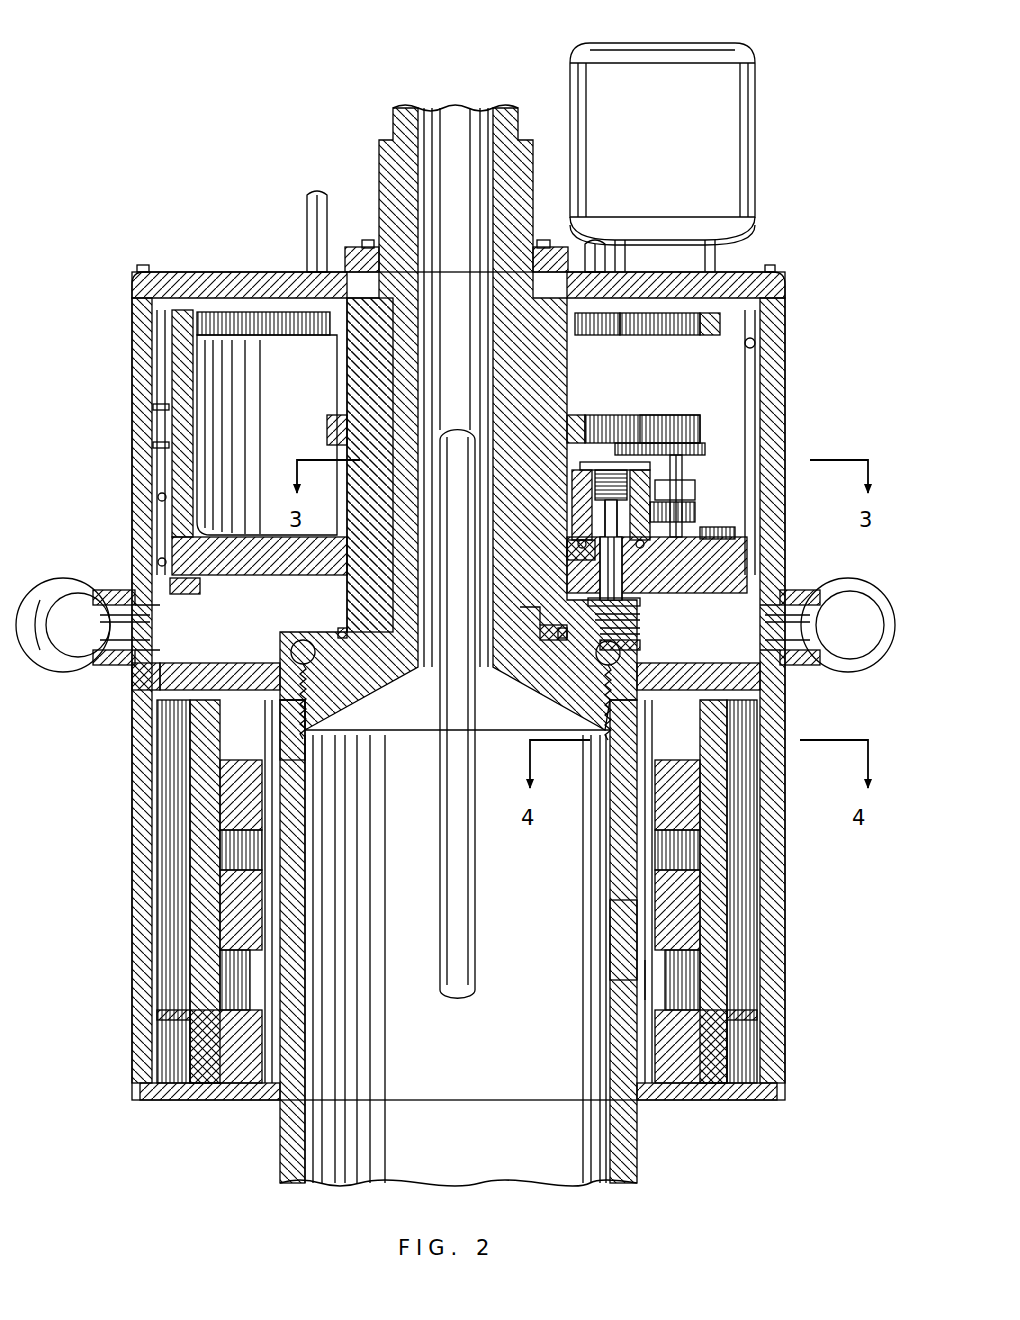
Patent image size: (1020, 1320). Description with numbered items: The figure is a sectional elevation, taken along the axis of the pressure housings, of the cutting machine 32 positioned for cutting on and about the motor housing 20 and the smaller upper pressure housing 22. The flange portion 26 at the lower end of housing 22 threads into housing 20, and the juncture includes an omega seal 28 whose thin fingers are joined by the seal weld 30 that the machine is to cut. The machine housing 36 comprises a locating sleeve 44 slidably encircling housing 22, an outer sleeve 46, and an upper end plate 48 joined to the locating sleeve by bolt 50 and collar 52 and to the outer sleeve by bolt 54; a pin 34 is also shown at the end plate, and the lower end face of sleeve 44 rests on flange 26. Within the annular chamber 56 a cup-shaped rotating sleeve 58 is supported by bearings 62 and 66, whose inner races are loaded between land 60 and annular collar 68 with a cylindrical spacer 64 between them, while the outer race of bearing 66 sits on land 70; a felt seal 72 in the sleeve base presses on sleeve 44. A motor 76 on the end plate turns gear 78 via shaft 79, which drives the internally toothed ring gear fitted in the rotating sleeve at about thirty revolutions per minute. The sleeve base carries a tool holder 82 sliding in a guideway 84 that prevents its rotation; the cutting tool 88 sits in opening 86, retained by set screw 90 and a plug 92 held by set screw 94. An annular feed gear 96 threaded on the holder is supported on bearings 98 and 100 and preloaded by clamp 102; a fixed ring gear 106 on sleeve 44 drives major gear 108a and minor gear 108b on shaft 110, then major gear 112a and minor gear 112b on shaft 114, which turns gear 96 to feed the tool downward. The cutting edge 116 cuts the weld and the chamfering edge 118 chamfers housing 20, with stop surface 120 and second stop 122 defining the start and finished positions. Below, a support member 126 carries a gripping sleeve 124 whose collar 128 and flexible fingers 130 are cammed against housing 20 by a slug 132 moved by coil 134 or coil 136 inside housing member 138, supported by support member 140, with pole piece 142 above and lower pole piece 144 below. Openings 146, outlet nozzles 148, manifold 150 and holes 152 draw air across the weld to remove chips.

The motor housing 20 is at (290, 1120).
The upper pressure housing 22 is at (393, 125).
The flange portion 26 is at (346, 731).
The omega seal 28 is at (282, 640).
The seal weld 30 is at (300, 640).
The cutting machine 32 is at (106, 255).
The locating pin 34 is at (307, 225).
The machine housing 36 is at (132, 325).
The locating sleeve 44 is at (356, 366).
The outer sleeve 46 is at (140, 370).
The upper end plate 48 is at (252, 272).
The bolt 50 is at (368, 240).
The collar 52 is at (357, 247).
The bolt 54 is at (775, 270).
The annular chamber 56 is at (290, 382).
The rotating sleeve 58 is at (160, 410).
The land 60 is at (742, 320).
The bearing 62 is at (756, 343).
The cylindrical spacer 64 is at (160, 447).
The bearing 66 is at (156, 497).
The annular collar 68 is at (200, 588).
The annular land 70 is at (156, 560).
The felt seal 72 is at (336, 570).
The motor 76 is at (748, 180).
The gear 78 is at (617, 335).
The shaft 79 is at (645, 340).
The tool holder 82 is at (722, 582).
The guideway 84 is at (640, 602).
The opening 86 is at (617, 562).
The cutting tool 88 is at (622, 583).
The set screw 90 is at (603, 663).
The plug 92 is at (585, 560).
The set screw 94 is at (605, 468).
The feed gear 96 is at (595, 520).
The bearings 98 is at (578, 544).
The bearing 100 is at (580, 505).
The clamp 102 is at (685, 515).
The ring gear 106 is at (337, 415).
The major gear 108a is at (702, 425).
The minor gear 108b is at (560, 440).
The shaft 110 is at (684, 470).
The major gear 112a is at (706, 450).
The minor gear 112b is at (722, 538).
The shaft 114 is at (695, 505).
The cutting edge 116 is at (640, 648).
The chamfering edge 118 is at (655, 640).
The stop surface 120 is at (555, 628).
The second stop 122 is at (640, 625).
The gripping sleeve 124 is at (630, 940).
The support member 126 is at (160, 685).
The collar 128 is at (296, 740).
The gripping fingers 130 is at (652, 880).
The slug 132 is at (642, 985).
The coil 134 is at (752, 865).
The coil 136 is at (752, 930).
The housing member 138 is at (713, 998).
The support member 140 is at (752, 1095).
The pole piece 142 is at (648, 822).
The lower pole piece 144 is at (672, 1058).
The openings 146 is at (128, 680).
The outlet nozzles 148 is at (125, 590).
The manifold 150 is at (55, 675).
The holes 152 is at (342, 638).